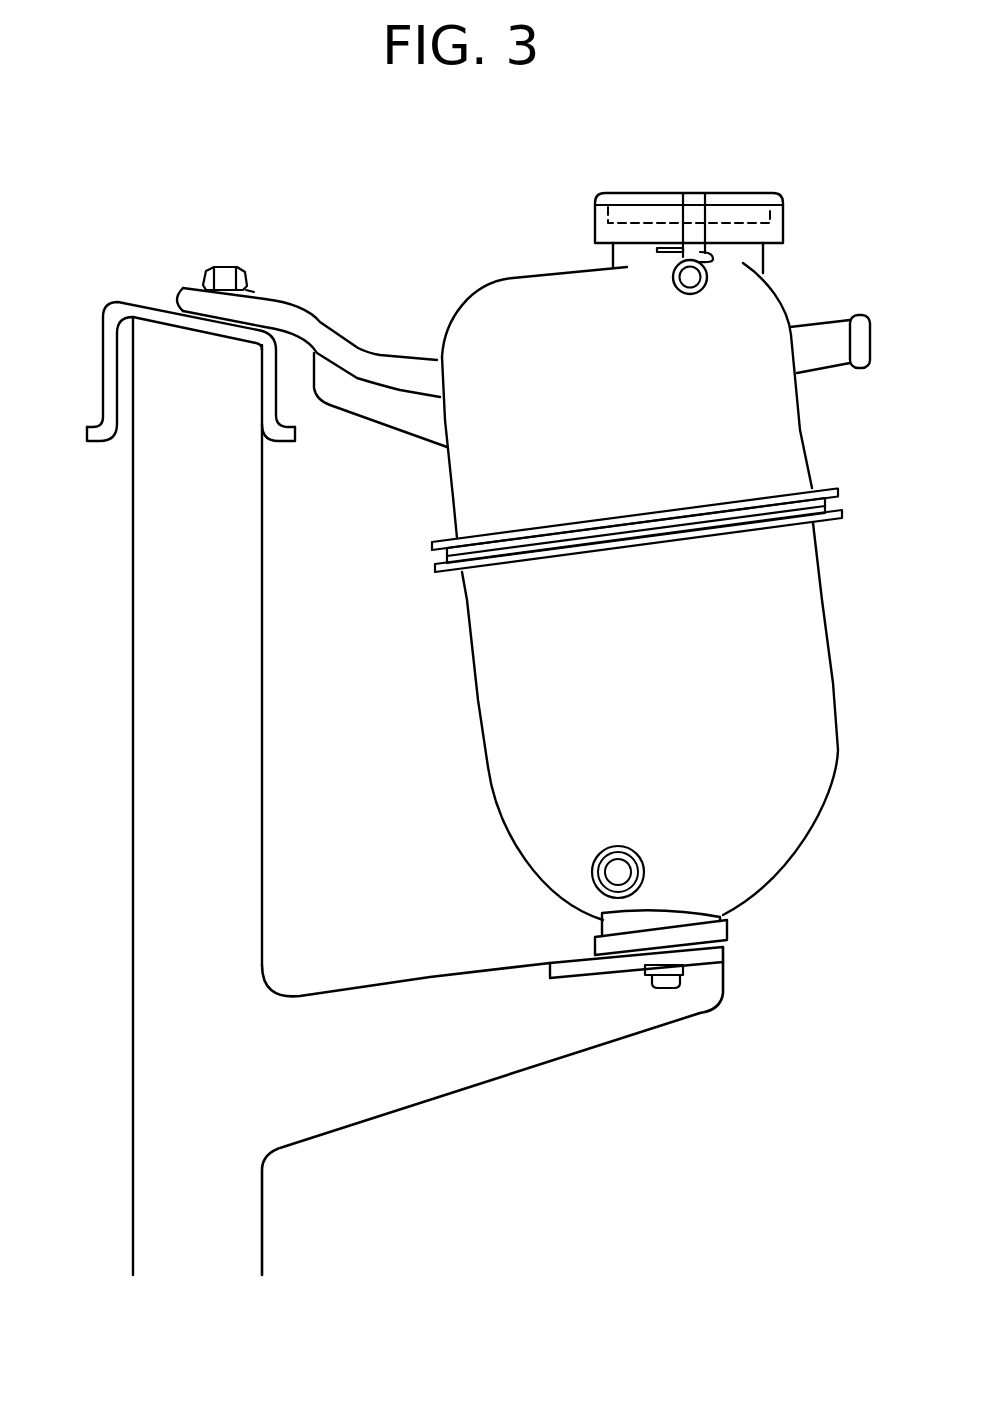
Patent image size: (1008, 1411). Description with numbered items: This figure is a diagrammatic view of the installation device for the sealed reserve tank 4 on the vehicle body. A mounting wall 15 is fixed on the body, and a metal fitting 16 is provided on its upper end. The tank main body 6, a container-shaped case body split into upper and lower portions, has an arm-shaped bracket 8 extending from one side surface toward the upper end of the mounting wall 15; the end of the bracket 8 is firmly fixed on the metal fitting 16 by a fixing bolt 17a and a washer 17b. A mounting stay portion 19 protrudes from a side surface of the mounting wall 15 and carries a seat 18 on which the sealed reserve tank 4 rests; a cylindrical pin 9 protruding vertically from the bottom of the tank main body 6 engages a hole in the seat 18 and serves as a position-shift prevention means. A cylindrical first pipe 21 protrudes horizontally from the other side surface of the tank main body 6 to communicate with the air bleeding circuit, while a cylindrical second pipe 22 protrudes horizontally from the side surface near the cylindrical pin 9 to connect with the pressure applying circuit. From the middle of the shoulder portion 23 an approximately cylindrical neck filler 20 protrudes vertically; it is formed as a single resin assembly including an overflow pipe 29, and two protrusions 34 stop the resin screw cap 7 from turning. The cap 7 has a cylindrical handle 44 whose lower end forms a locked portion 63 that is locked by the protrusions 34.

The sealed reserve tank 4 is at (451, 236).
The tank main body 6 is at (783, 460).
The resin screw cap 7 is at (722, 192).
The bracket 8 is at (313, 328).
The cylindrical pin 9 is at (667, 985).
The mounting wall 15 is at (150, 950).
The metal fitting 16 is at (130, 304).
The fixing bolt 17a is at (227, 265).
The washer 17b is at (248, 292).
The seat 18 is at (712, 946).
The mounting stay portion 19 is at (533, 1043).
The neck filler 20 is at (765, 258).
The first pipe 21 is at (830, 367).
The second pipe 22 is at (592, 877).
The shoulder portion 23 is at (513, 277).
The overflow pipe 29 is at (707, 287).
The protrusions 34 is at (707, 247).
The cylindrical handle 44 is at (788, 213).
The locked portion 63 is at (677, 257).